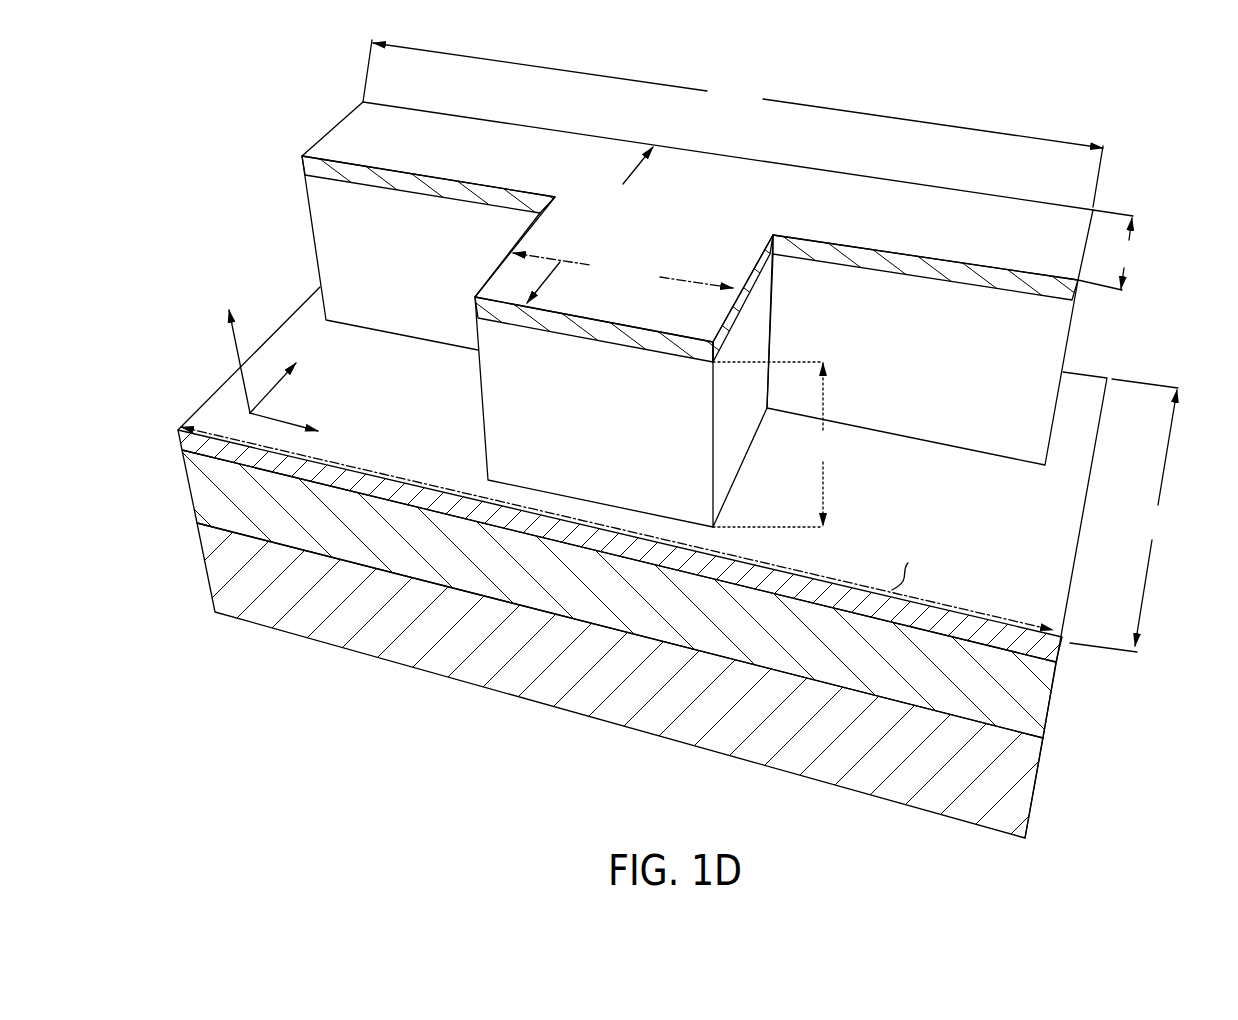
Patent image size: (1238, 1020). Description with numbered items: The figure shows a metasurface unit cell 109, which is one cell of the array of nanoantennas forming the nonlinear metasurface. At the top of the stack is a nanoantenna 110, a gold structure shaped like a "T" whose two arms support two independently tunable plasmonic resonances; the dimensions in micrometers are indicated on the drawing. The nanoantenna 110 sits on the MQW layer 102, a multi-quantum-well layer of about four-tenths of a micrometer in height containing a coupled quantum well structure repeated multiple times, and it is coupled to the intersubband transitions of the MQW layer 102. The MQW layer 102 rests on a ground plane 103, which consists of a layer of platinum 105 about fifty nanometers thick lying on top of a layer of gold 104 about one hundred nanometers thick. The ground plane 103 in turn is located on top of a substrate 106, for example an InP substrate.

The MQW layer 102 is at (1070, 330).
The ground plane 103 is at (176, 432).
The layer of gold 104 is at (1053, 704).
The layer of platinum 105 is at (1067, 656).
The substrate 106 is at (1038, 791).
The metasurface unit cell 109 is at (1150, 168).
The nanoantenna 110 is at (1000, 207).